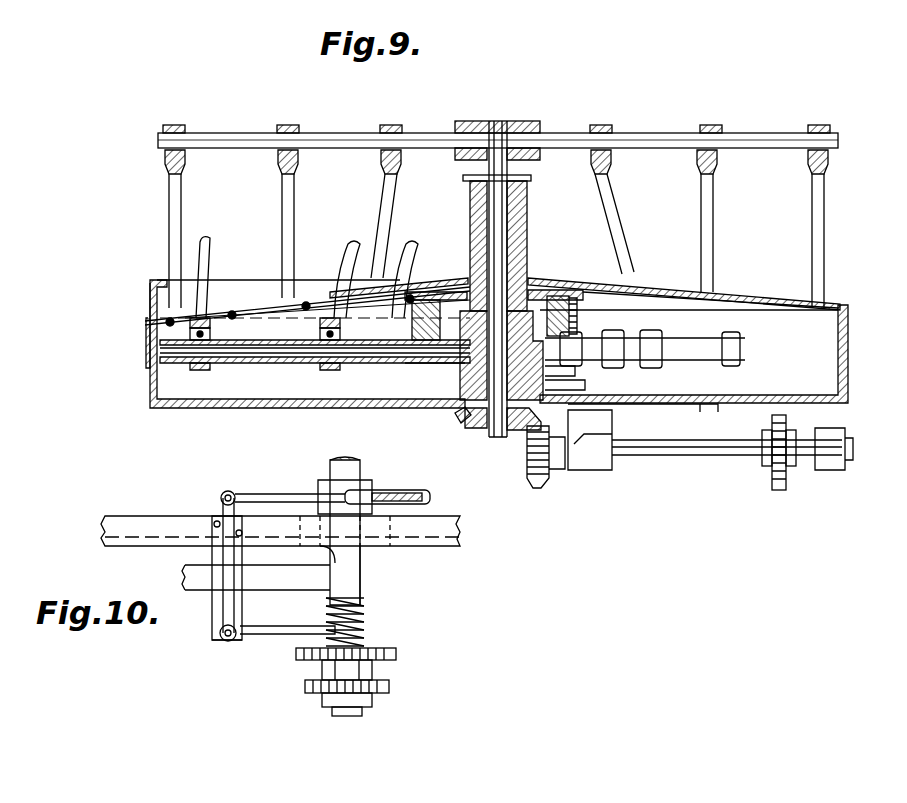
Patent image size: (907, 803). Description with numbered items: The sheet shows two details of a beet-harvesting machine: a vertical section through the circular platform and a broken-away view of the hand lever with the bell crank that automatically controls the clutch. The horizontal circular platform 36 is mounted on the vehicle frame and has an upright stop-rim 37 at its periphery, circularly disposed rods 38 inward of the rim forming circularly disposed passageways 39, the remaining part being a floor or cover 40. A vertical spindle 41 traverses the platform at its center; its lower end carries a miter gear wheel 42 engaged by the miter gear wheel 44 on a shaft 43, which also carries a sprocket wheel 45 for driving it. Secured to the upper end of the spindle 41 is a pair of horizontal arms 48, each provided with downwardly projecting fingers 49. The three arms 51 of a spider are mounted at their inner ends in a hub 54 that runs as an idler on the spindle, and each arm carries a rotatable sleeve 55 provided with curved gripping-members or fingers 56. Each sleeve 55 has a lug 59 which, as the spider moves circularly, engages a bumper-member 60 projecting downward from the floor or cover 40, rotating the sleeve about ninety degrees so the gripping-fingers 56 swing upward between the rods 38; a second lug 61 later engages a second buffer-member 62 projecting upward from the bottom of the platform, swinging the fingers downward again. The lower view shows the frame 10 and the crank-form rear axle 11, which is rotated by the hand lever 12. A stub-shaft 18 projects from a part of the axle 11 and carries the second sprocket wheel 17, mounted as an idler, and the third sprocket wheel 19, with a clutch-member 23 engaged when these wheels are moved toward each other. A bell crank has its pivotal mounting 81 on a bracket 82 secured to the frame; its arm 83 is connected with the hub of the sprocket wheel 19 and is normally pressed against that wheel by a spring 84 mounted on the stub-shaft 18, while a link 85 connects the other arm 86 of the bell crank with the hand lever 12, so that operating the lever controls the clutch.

In FIG. 9, the horizontal arms 48 is at (212, 143).
In FIG. 9, the downwardly projecting fingers 49 is at (173, 210).
In FIG. 9, the curved gripping-members or fingers 56 is at (206, 258).
In FIG. 9, the horizontal circular platform 36 is at (497, 357).
In FIG. 9, the upright stop-rim 37 is at (150, 305).
In FIG. 9, the circularly disposed rods 38 is at (302, 290).
In FIG. 9, the circularly disposed passageways 39 is at (272, 312).
In FIG. 9, the sleeve 55 is at (234, 363).
In FIG. 9, the arms of a spider 51 is at (380, 366).
In FIG. 9, the lug 59 is at (599, 303).
In FIG. 9, the bumper-member 60 is at (430, 291).
In FIG. 9, the hub 54 is at (544, 300).
In FIG. 9, the floor or cover 40 is at (742, 302).
In FIG. 9, the vertical spindle 41 is at (500, 244).
In FIG. 9, the miter gear wheel 42 is at (462, 425).
In FIG. 9, the miter gear wheel 44 is at (540, 488).
In FIG. 9, the shaft 43 is at (708, 457).
In FIG. 9, the sprocket wheel 45 is at (788, 482).
In FIG. 9, the second lug 61 is at (576, 371).
In FIG. 9, the second buffer-member 62 is at (586, 385).
In FIG. 10, the frame 10 is at (158, 526).
In FIG. 10, the rear axle 11 is at (348, 548).
In FIG. 10, the arm of the bell crank 86 is at (226, 556).
In FIG. 10, the bracket 82 is at (243, 604).
In FIG. 10, the link 85 is at (284, 497).
In FIG. 10, the hand lever 12 is at (430, 497).
In FIG. 10, the spring 84 is at (364, 603).
In FIG. 10, the arm of the bell crank 83 is at (262, 636).
In FIG. 10, the pivotal mounting 81 is at (220, 641).
In FIG. 10, the third sprocket wheel 19 is at (396, 654).
In FIG. 10, the clutch-member 23 is at (322, 668).
In FIG. 10, the second sprocket wheel 17 is at (389, 688).
In FIG. 10, the stub-shaft 18 is at (350, 711).